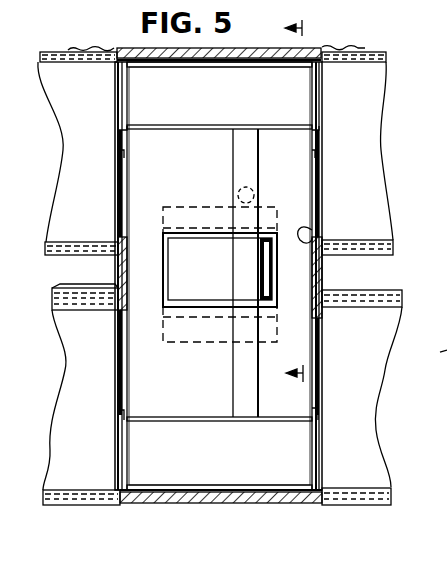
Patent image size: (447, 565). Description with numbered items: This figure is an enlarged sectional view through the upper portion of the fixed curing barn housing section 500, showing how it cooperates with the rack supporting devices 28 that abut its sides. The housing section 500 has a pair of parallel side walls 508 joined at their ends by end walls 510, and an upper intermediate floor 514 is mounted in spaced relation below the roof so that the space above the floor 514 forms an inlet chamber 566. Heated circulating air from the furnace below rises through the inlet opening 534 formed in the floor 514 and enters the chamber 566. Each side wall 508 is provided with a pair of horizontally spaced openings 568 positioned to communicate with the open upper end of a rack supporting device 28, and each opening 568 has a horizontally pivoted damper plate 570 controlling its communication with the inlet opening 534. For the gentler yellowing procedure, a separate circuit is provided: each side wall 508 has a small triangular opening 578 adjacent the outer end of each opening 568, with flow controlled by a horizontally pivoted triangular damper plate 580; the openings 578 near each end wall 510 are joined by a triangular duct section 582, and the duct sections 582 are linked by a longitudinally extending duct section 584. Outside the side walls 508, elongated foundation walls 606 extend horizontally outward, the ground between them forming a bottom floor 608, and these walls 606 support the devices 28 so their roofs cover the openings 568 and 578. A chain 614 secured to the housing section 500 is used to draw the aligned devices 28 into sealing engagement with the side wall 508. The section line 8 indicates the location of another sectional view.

The rack supporting device 28 is at (390, 93).
The fixed curing barn housing section 500 is at (116, 48).
The side wall 508 is at (312, 255).
The end wall 510 is at (195, 68).
The upper intermediate floor 514 is at (189, 188).
The inlet opening 534 is at (178, 300).
The inlet chamber 566 is at (312, 230).
The opening 568 is at (118, 150).
The damper plate 570 is at (118, 186).
The small opening 578 is at (119, 115).
The triangular damper plate 580 is at (118, 80).
The triangular duct section 582 is at (160, 118).
The longitudinally extending duct section 584 is at (250, 158).
The foundation wall 606 is at (75, 50).
The bottom floor 608 is at (446, 350).
The chain 614 is at (372, 256).
The section line 8 is at (302, 28).